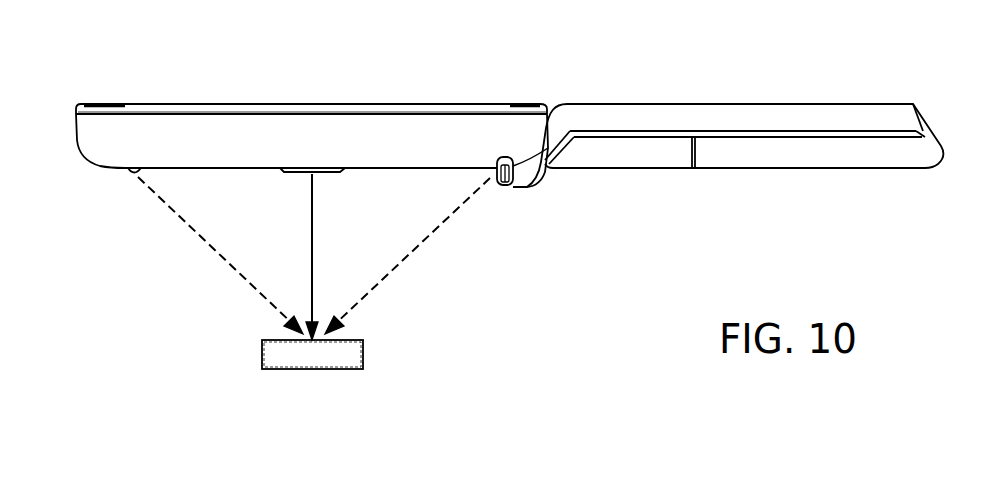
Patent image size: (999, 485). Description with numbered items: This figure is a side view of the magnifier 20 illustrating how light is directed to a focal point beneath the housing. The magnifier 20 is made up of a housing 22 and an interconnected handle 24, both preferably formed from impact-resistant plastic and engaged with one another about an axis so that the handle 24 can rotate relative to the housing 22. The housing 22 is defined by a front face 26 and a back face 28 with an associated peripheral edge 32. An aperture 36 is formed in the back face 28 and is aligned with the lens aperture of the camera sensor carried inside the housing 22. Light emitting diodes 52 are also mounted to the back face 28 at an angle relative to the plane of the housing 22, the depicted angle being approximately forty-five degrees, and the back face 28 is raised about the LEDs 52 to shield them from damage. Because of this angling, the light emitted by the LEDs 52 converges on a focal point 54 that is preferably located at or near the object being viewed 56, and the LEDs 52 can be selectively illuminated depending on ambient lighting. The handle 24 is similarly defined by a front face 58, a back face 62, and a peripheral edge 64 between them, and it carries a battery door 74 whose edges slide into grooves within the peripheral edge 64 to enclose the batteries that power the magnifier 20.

The magnifier 20 is at (586, 69).
The housing 22 is at (443, 104).
The handle 24 is at (730, 160).
The front face 26 is at (156, 105).
The back face 28 is at (117, 168).
The peripheral edge 32 is at (312, 113).
The aperture 36 is at (337, 172).
The light emitting diodes 52 is at (138, 172).
The focal point 54 is at (323, 331).
The object being viewed 56 is at (363, 354).
The front face 58 is at (868, 104).
The back face 62 is at (898, 160).
The peripheral edge 64 is at (926, 118).
The battery door 74 is at (803, 160).